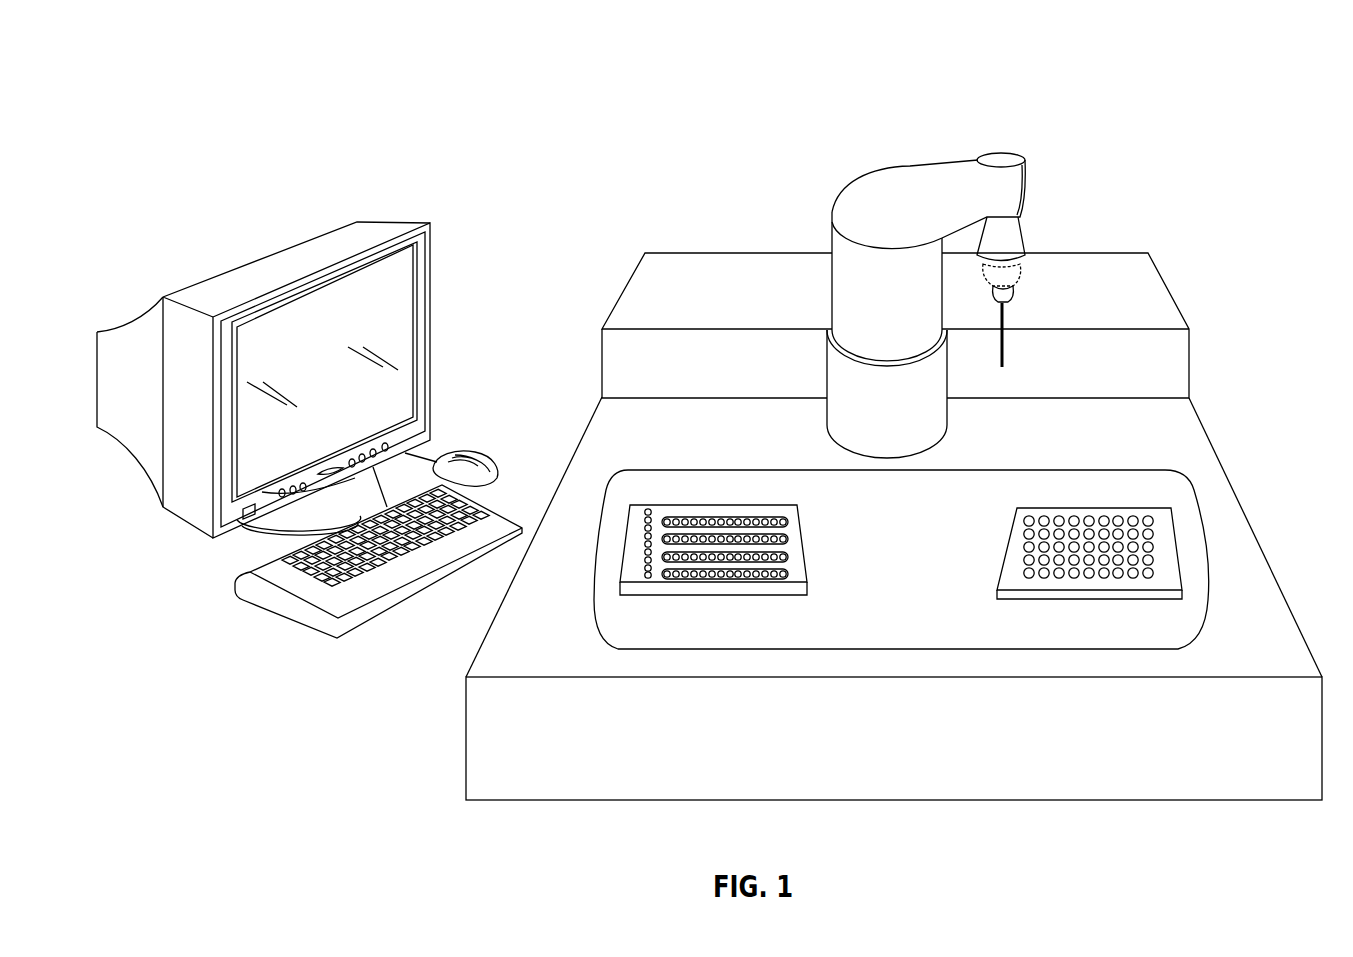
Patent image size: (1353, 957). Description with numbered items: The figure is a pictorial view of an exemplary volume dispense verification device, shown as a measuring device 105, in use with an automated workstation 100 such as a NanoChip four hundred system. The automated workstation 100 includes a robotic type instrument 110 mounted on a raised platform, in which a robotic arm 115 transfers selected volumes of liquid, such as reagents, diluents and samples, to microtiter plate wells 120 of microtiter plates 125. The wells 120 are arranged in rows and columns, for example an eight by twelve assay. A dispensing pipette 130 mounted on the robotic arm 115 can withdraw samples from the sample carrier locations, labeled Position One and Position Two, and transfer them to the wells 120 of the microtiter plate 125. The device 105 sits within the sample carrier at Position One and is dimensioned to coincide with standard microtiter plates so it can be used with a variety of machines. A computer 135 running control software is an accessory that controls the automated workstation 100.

The automated workstation 100 is at (171, 84).
The measuring device 105 is at (690, 512).
The robotic type instrument 110 is at (832, 158).
The robotic arm 115 is at (978, 190).
The microtiter plate wells 120 is at (1042, 517).
The microtiter plate 125 is at (1010, 525).
The dispensing pipette 130 is at (1007, 347).
The computer 135 is at (445, 233).